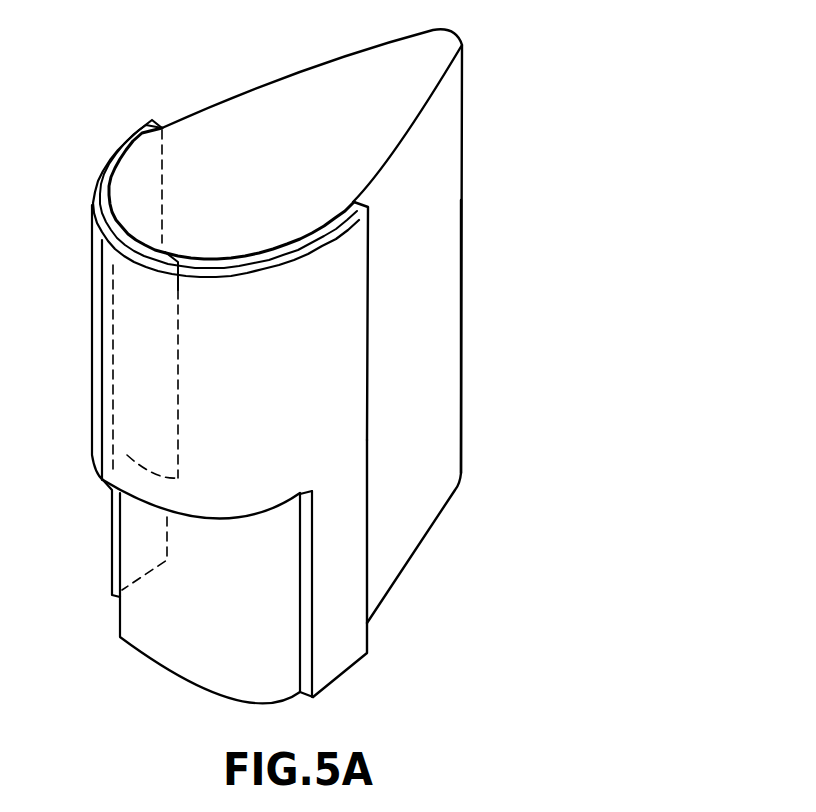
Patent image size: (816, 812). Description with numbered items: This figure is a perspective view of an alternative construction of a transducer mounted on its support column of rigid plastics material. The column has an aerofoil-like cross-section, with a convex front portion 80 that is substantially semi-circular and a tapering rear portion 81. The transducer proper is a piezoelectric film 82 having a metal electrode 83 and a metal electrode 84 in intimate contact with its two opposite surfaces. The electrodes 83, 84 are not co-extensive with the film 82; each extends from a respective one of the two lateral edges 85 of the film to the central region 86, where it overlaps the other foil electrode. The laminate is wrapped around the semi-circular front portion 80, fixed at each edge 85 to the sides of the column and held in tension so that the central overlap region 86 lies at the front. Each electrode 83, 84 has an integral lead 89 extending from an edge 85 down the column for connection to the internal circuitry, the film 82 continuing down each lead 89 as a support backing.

The convex front portion 80 is at (140, 173).
The tapering rear portion 81 is at (387, 82).
The piezoelectric film 82 is at (92, 318).
The metal electrode 83 is at (167, 255).
The metal electrode 84 is at (343, 315).
The lateral edge 85 is at (365, 437).
The central region 86 is at (135, 405).
The integral lead 89 is at (110, 533).